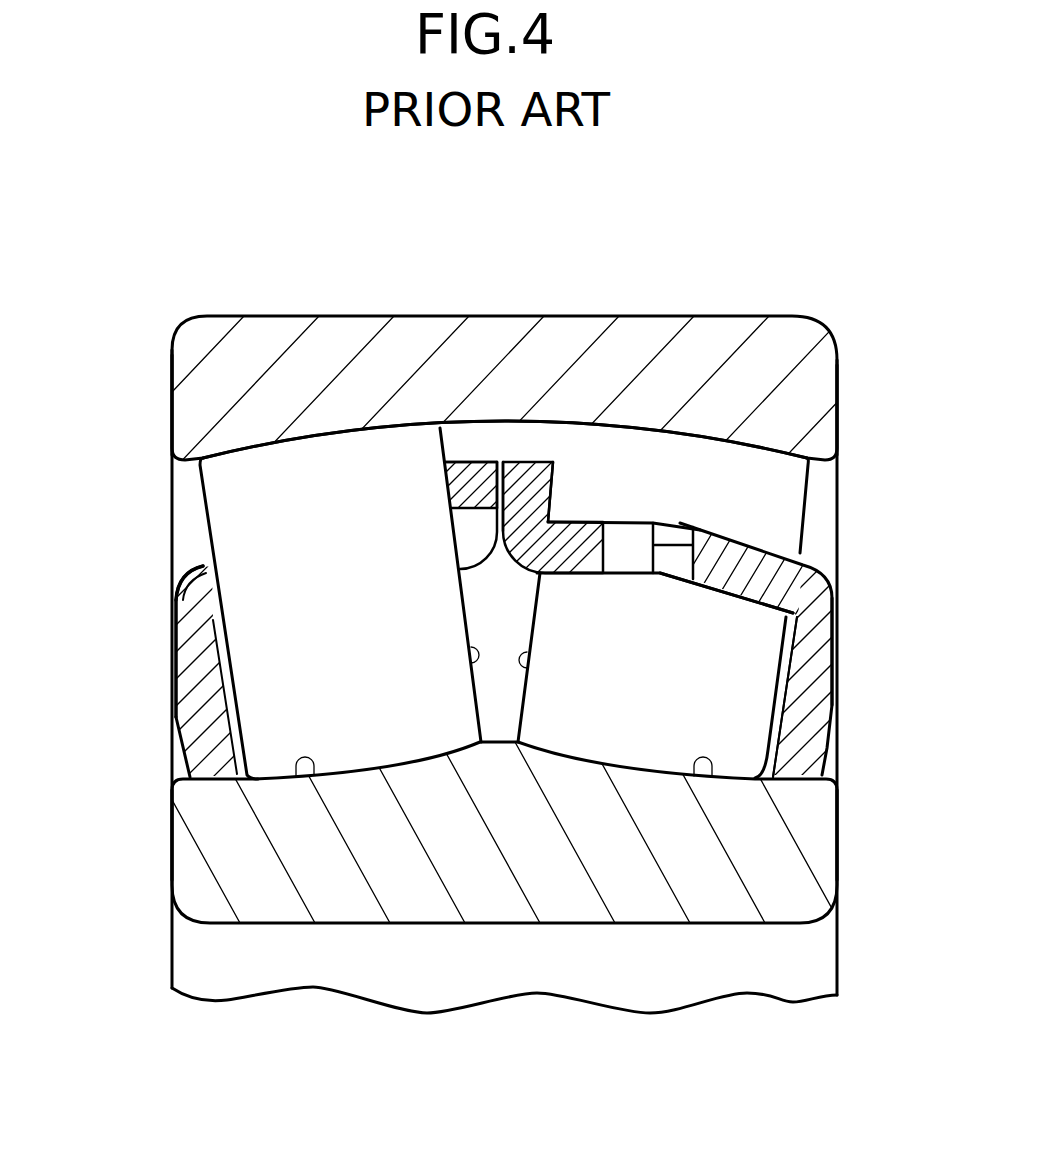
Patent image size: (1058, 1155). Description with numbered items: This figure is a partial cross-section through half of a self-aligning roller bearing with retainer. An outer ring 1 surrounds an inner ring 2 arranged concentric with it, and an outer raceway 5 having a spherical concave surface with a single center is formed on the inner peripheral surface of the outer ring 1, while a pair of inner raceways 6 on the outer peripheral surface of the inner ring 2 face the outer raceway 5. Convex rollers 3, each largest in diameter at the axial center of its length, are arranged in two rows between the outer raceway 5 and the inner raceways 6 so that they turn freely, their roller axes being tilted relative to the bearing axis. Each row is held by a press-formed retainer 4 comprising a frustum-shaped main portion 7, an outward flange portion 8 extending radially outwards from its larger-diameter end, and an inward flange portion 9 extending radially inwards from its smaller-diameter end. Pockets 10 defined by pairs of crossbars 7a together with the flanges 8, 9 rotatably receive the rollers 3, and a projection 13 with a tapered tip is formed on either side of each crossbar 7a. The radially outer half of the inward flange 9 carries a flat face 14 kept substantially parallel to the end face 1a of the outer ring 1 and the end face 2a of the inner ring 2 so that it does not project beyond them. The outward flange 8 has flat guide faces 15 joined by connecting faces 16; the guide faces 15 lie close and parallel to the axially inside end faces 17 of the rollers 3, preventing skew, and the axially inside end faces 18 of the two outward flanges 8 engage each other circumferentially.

The outer ring 1 is at (806, 336).
The end face of the outer ring 1a is at (172, 376).
The inner ring 2 is at (808, 905).
The end face of the inner ring 2a is at (172, 836).
The convex roller 3 is at (218, 524).
The retainer 4 is at (182, 600).
The outer raceway 5 is at (688, 437).
The inner raceway 6 is at (298, 775).
The main portion 7 is at (790, 548).
The crossbar 7a is at (720, 578).
The outward flange portion 8 is at (463, 477).
The inward flange portion 9 is at (190, 712).
The pocket 10 is at (221, 572).
The projection 13 is at (680, 535).
The flat face 14 is at (185, 655).
The guide face 15 is at (447, 487).
The connecting face 16 is at (560, 485).
The axially inside end face of the convex roller 17 is at (473, 660).
The axially inside end face of the outward flange portion 18 is at (487, 477).